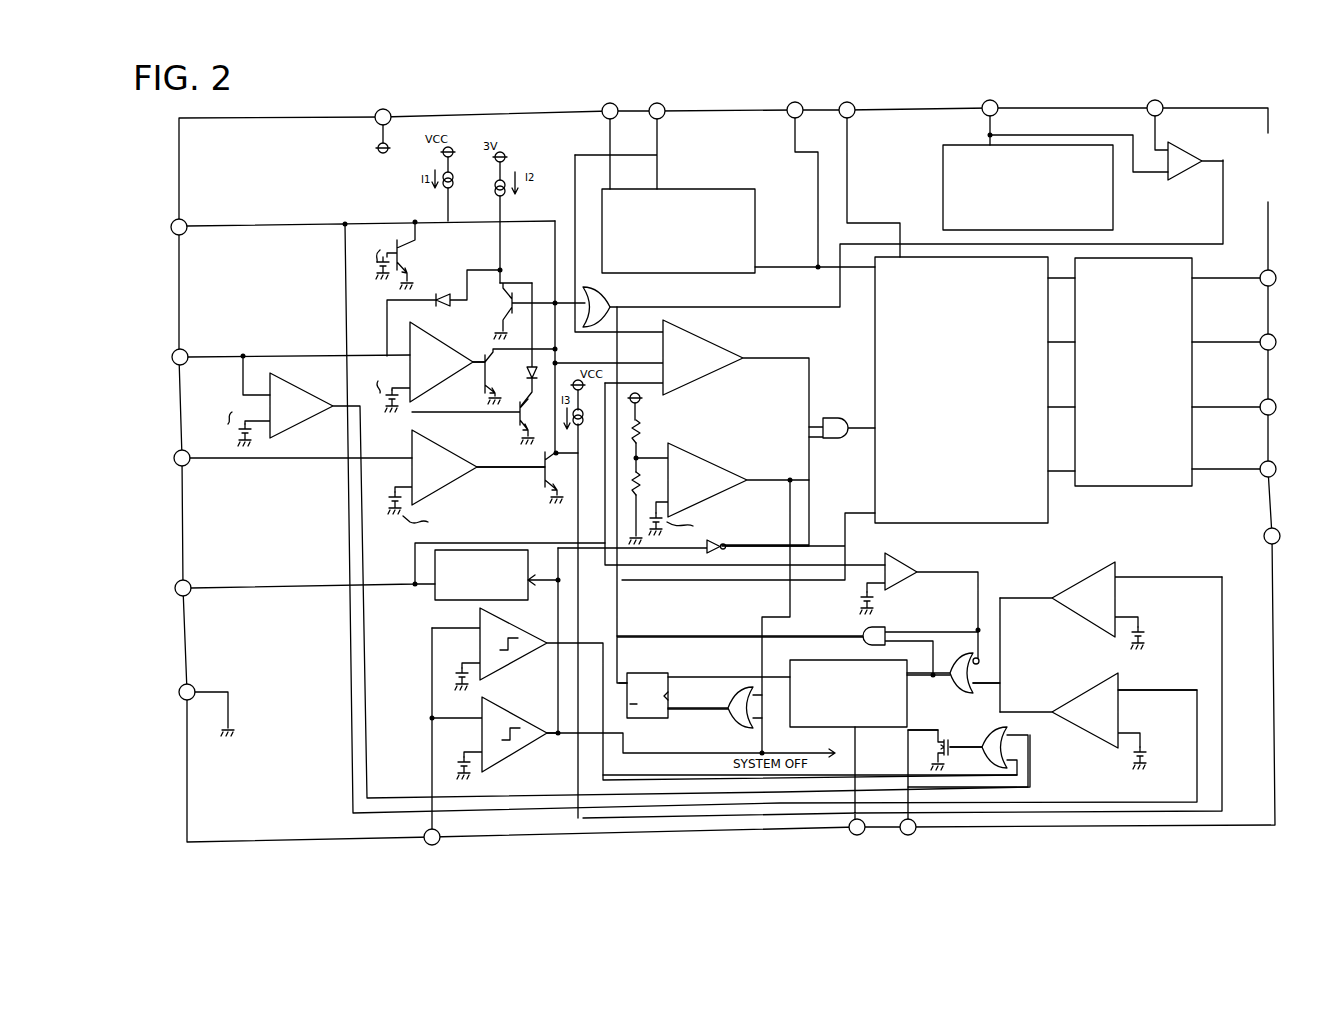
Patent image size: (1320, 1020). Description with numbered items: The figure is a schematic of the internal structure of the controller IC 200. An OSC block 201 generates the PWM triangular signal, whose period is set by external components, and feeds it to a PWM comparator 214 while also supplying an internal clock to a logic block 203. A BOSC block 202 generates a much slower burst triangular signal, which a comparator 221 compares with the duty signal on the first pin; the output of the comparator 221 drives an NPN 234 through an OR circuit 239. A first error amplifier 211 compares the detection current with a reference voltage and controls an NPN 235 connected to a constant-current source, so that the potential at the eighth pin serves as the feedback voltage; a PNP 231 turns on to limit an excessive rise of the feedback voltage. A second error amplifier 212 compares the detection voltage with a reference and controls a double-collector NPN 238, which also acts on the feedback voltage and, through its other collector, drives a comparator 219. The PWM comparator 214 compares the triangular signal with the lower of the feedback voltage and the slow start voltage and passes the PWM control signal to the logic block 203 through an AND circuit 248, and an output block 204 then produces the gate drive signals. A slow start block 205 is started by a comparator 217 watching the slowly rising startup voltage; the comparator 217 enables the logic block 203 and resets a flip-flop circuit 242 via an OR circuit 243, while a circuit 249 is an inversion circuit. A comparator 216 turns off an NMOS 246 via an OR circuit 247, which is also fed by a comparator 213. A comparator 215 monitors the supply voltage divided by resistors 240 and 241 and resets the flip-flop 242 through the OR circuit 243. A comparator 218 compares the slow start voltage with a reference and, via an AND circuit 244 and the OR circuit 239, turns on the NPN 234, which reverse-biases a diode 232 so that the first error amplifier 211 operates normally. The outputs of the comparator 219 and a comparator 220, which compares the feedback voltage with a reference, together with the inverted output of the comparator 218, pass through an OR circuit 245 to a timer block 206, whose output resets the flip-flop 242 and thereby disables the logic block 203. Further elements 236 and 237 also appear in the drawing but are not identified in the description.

The controller IC 200 is at (253, 118).
The OSC block 201 is at (700, 189).
The BOSC block 202 is at (1113, 203).
The logic block 203 is at (1003, 523).
The output block 204 is at (1140, 486).
The slow start block 205 is at (430, 600).
The timer block 206 is at (822, 727).
The first error amplifier 211 is at (432, 335).
The second error amplifier 212 is at (437, 441).
The comparator 213 is at (318, 392).
The PWM comparator 214 is at (710, 333).
The comparator 215 is at (708, 452).
The comparator 216 is at (527, 668).
The comparator 217 is at (534, 757).
The comparator 218 is at (905, 554).
The comparator 219 is at (1093, 565).
The comparator 220 is at (1083, 690).
The comparator 221 is at (1197, 176).
The PNP transistor 231 is at (410, 241).
The diode 232 is at (443, 291).
The NPN transistor 234 is at (508, 312).
The NPN transistor 235 is at (486, 390).
The transistor 236 is at (527, 427).
The diode 237 is at (541, 372).
The double-collector type NPN transistor 238 is at (556, 494).
The OR circuit 239 is at (618, 312).
The resistor 240 is at (649, 432).
The resistor 241 is at (648, 508).
The flip-flop circuit 242 is at (657, 673).
The OR circuit 243 is at (738, 728).
The AND circuit 244 is at (860, 630).
The OR circuit 245 is at (956, 658).
The NMOS transistor 246 is at (935, 730).
The OR circuit 247 is at (985, 730).
The AND circuit 248 is at (835, 415).
The inversion circuit 249 is at (727, 549).